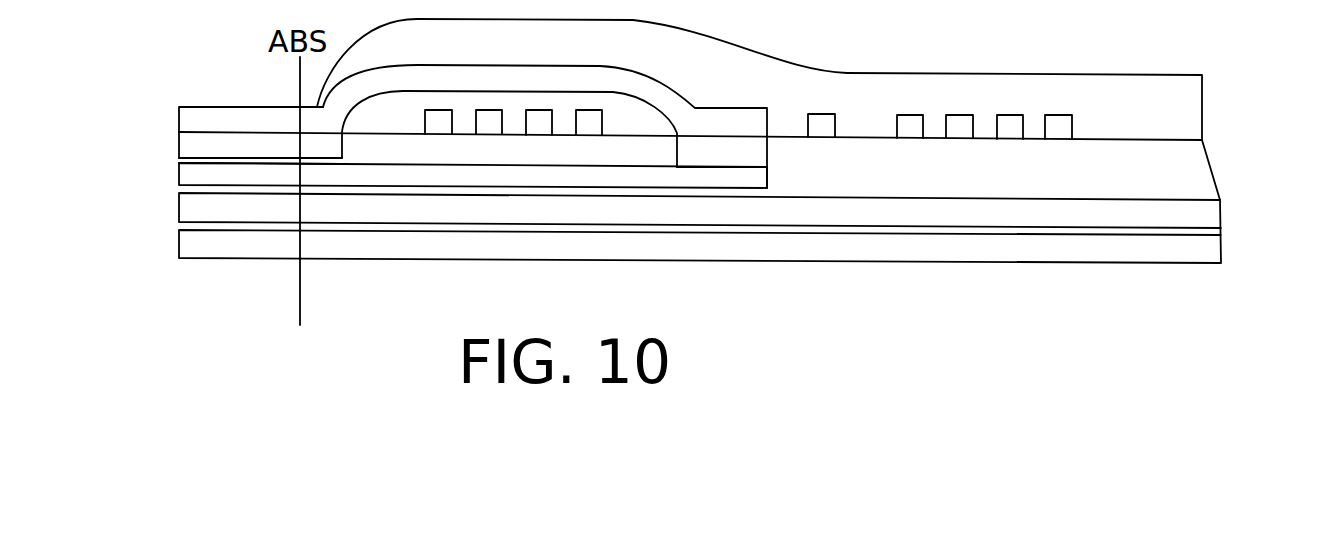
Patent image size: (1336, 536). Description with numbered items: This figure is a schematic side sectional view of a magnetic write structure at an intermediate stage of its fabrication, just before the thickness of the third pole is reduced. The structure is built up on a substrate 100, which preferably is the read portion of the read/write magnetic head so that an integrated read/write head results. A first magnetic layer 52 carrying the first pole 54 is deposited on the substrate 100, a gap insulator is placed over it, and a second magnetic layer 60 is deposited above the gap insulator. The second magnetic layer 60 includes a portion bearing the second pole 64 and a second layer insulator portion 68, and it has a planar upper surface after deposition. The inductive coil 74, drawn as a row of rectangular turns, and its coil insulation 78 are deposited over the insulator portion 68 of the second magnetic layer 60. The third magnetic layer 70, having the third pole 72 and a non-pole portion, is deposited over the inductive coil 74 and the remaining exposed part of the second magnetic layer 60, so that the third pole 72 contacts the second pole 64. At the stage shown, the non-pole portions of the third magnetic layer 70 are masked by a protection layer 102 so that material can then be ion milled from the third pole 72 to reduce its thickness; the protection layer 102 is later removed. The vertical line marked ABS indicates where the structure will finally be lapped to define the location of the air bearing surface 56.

The first magnetic layer 52 is at (768, 173).
The first pole 54 is at (305, 175).
The air bearing surface 56 is at (298, 290).
The second magnetic layer 60 is at (768, 150).
The second pole 64 is at (317, 159).
The second layer insulator portion 68 is at (575, 152).
The third magnetic layer 70 is at (740, 108).
The third pole 72 is at (290, 107).
The inductive coil 74 is at (588, 110).
The coil insulation 78 is at (508, 100).
The substrate 100 is at (1225, 200).
The protection layer 102 is at (890, 73).